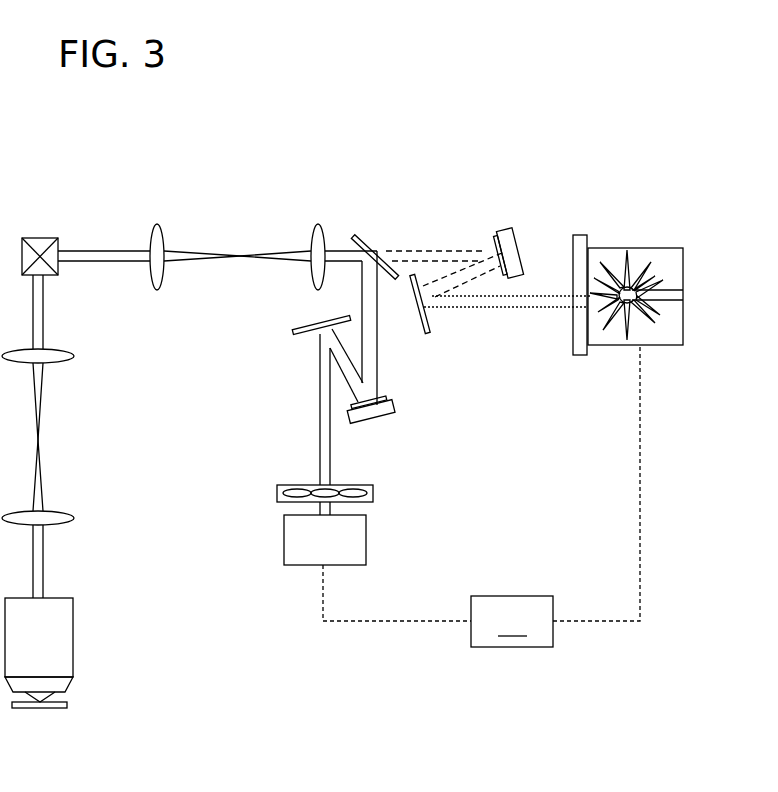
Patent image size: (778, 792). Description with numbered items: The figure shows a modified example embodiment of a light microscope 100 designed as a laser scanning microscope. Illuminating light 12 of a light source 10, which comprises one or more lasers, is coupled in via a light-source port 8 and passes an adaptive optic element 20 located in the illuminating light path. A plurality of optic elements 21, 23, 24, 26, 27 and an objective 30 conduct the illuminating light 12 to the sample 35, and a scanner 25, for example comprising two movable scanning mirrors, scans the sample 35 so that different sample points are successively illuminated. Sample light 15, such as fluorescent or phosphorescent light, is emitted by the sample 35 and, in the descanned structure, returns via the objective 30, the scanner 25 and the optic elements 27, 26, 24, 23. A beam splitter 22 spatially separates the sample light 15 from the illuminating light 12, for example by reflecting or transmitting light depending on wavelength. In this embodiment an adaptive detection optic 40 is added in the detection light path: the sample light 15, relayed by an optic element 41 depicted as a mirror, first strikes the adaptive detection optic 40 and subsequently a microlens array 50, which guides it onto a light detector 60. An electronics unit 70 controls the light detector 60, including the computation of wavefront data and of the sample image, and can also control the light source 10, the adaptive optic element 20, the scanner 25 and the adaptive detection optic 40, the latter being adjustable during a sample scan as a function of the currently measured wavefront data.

The light microscope 100 is at (570, 58).
The scanner 25 is at (40, 237).
The optic element 24 is at (158, 223).
The optic element 23 is at (320, 223).
The beam splitter 22 is at (366, 240).
The optic element 21 is at (430, 322).
The adaptive optic element 20 is at (511, 237).
The illuminating light 12 is at (523, 309).
The light-source port 8 is at (584, 237).
The light source 10 is at (666, 248).
The electronics unit 70 is at (512, 621).
The light detector 60 is at (366, 537).
The microlens array 50 is at (277, 492).
The optic element 41 is at (303, 337).
The sample light 15 is at (361, 303).
The adaptive detection optic 40 is at (383, 418).
The optic element 26 is at (76, 356).
The optic element 27 is at (76, 518).
The objective 30 is at (57, 637).
The sample 35 is at (68, 703).